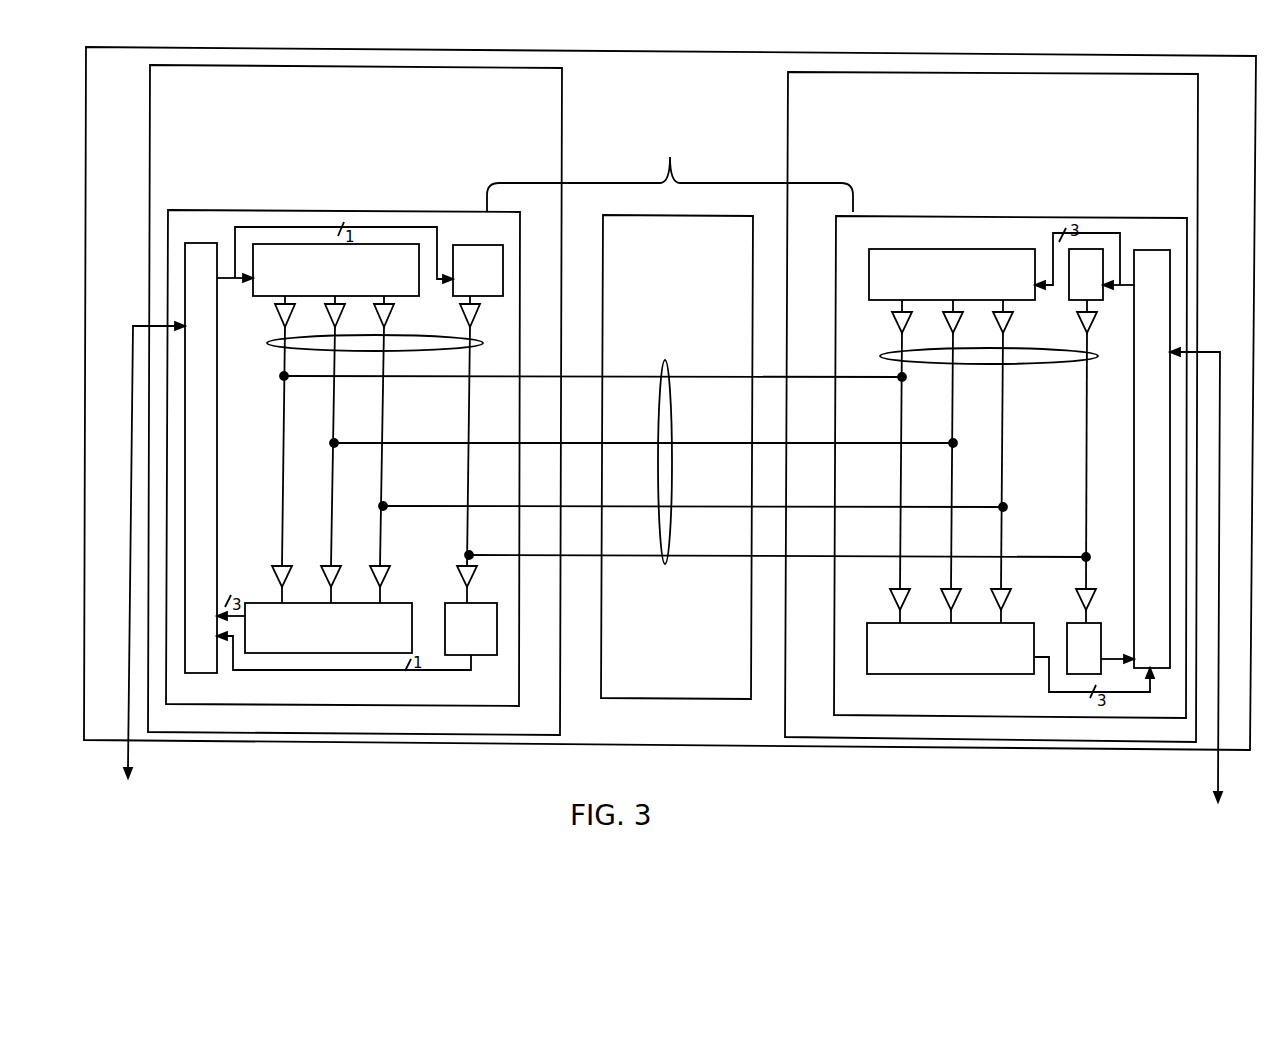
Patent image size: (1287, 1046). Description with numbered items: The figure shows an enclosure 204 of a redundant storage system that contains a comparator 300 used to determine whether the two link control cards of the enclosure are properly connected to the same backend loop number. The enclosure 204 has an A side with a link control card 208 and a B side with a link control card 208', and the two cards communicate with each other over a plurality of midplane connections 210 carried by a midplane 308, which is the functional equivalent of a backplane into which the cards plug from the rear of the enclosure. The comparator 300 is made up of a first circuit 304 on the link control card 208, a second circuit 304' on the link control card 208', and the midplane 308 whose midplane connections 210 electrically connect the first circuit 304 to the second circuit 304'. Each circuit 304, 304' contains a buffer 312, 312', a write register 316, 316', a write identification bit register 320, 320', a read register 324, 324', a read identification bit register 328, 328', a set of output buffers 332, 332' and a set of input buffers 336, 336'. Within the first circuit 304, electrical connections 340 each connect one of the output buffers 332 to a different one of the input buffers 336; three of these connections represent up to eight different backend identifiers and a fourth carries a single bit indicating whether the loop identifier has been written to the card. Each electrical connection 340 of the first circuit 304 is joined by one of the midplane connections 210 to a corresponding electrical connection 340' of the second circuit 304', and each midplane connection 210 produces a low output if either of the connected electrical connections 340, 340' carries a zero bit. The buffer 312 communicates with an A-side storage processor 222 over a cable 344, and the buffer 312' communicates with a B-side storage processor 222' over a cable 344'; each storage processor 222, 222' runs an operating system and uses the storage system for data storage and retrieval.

The enclosure 204 is at (712, 10).
The link control card 208 is at (355, 400).
The link control card 208' is at (991, 407).
The comparator 300 is at (670, 169).
The first circuit 304 is at (343, 436).
The second circuit 304' is at (1010, 445).
The midplane 308 is at (659, 671).
The midplane connections 210 is at (665, 360).
The buffer 312 is at (158, 423).
The buffer 312' is at (1193, 426).
The write register 316 is at (343, 233).
The write register 316' is at (952, 227).
The write identification bit register 320 is at (478, 270).
The write identification bit register 320' is at (1117, 238).
The read register 324 is at (328, 667).
The read register 324' is at (950, 702).
The read identification bit register 328 is at (471, 629).
The read identification bit register 328' is at (1115, 701).
The output buffers 332 is at (377, 315).
The output buffers 332' is at (994, 320).
The input buffers 336 is at (374, 584).
The input buffers 336' is at (993, 603).
The electrical connections 340 is at (356, 393).
The electrical connections 340' is at (989, 405).
The cable 344 is at (141, 536).
The cable 344' is at (1211, 543).
The storage processor 222 is at (174, 829).
The storage processor 222' is at (1197, 866).